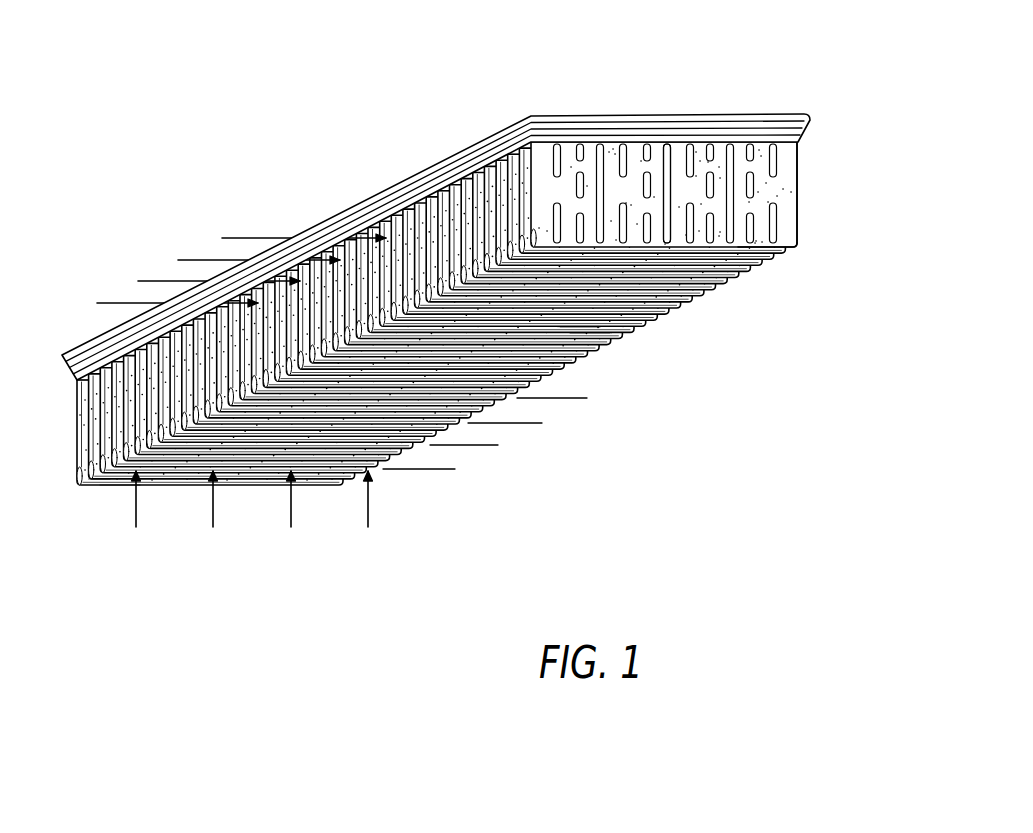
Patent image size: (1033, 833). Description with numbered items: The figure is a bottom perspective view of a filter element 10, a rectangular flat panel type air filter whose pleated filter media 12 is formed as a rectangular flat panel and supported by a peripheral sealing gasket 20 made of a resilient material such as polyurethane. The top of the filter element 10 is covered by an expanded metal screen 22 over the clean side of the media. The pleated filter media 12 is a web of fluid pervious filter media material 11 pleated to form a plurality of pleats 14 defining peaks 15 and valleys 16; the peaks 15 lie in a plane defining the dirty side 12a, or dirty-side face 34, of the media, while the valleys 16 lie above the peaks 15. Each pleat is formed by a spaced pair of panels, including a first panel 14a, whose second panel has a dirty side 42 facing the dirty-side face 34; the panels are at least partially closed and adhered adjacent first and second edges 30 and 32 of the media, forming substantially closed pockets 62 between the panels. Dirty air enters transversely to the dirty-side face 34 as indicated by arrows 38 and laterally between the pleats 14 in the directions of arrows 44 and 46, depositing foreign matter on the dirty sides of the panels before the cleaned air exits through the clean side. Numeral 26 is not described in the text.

The filter element 10 is at (443, 313).
The fluid pervious filter media material 11 is at (790, 157).
The pleated filter media 12 is at (697, 256).
The dirty side of the filter media 12a is at (738, 285).
The pleats 14 is at (443, 353).
The first panel 14a is at (664, 236).
The peaks 15 is at (590, 336).
The valleys 16 is at (323, 253).
The peripheral sealing gasket 20 is at (665, 122).
The expanded metal screen 22 is at (512, 154).
The fin tab 26 is at (420, 212).
The first edge 30 is at (798, 228).
The second edge 32 is at (450, 214).
The dirty-side face 34 is at (122, 482).
The arrows indicating dirty air flow 38 is at (368, 527).
The dirty side of the second panel 42 is at (103, 425).
The arrows indicating lateral air flow 44 is at (97, 303).
The arrows indicating lateral air flow 46 is at (568, 399).
The pockets 62 is at (108, 477).